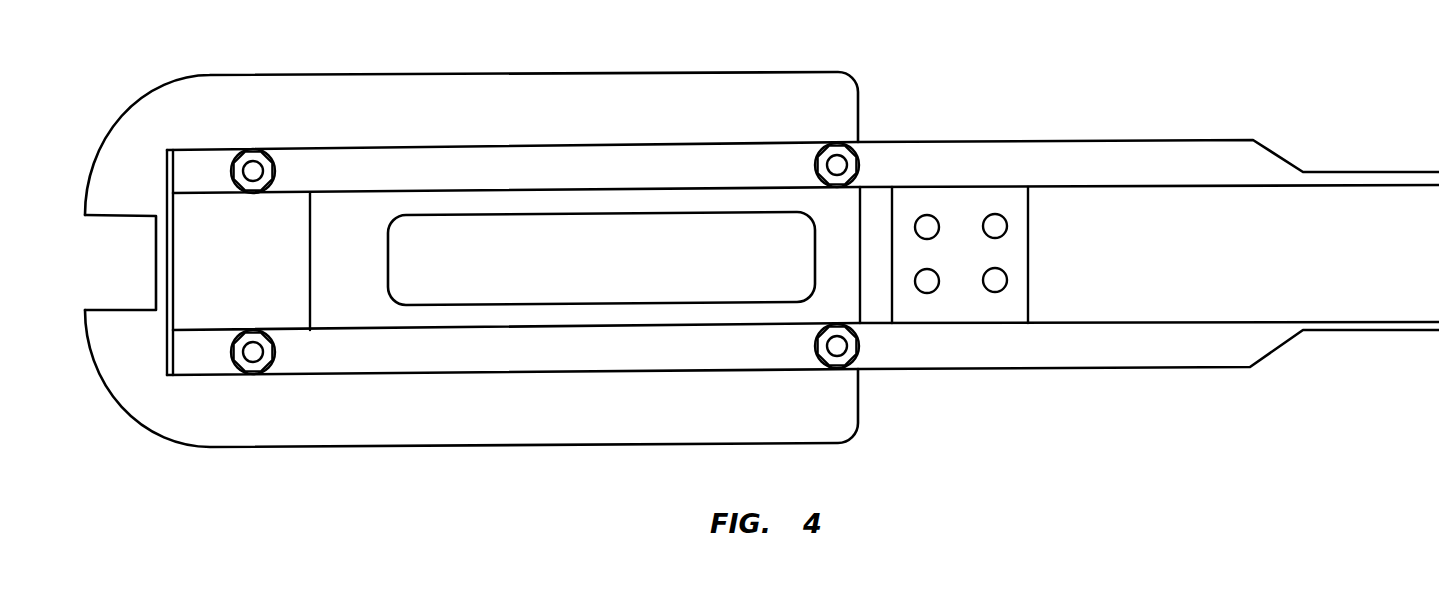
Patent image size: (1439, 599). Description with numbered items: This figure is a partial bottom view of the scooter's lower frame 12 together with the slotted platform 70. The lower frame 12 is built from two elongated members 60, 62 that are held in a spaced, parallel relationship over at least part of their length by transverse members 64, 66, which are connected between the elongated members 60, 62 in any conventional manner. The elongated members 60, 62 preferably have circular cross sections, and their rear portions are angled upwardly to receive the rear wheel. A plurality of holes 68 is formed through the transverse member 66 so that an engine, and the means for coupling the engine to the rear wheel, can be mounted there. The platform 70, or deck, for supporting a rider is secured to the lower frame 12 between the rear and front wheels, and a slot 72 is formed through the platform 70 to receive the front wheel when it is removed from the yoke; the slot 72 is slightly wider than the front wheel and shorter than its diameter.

The lower frame 12 is at (803, 242).
The elongated member 60 is at (1172, 177).
The elongated member 62 is at (1185, 353).
The transverse member 64 is at (193, 263).
The transverse member 66 is at (1013, 244).
The holes 68 is at (1003, 278).
The platform 70 is at (428, 88).
The slot 72 is at (405, 255).